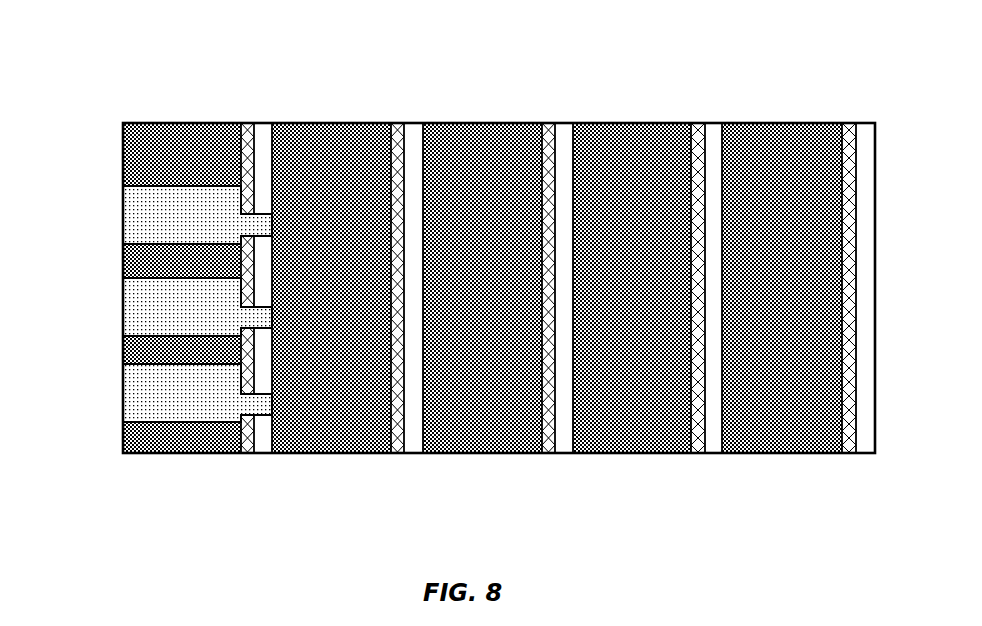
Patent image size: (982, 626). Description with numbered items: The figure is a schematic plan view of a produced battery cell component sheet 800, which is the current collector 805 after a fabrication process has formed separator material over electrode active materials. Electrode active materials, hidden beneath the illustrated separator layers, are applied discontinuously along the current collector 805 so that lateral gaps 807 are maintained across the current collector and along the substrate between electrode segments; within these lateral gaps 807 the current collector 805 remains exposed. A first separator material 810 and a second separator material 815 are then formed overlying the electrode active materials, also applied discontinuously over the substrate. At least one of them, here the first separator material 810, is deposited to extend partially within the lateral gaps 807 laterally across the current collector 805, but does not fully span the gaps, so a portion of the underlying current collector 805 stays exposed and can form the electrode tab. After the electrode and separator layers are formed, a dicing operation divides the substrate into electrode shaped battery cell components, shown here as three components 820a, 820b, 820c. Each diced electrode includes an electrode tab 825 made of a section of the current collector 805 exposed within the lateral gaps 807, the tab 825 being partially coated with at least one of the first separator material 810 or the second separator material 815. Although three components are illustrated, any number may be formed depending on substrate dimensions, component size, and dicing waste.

The battery cell component sheet 800 is at (142, 86).
The current collector 805 is at (863, 122).
The lateral gaps 807 is at (404, 122).
The first separator material 810 is at (695, 453).
The second separator material 815 is at (619, 122).
The electrode shaped component 820a is at (122, 207).
The electrode shaped component 820b is at (122, 298).
The electrode shaped component 820c is at (122, 393).
The electrode tab 825 is at (262, 418).